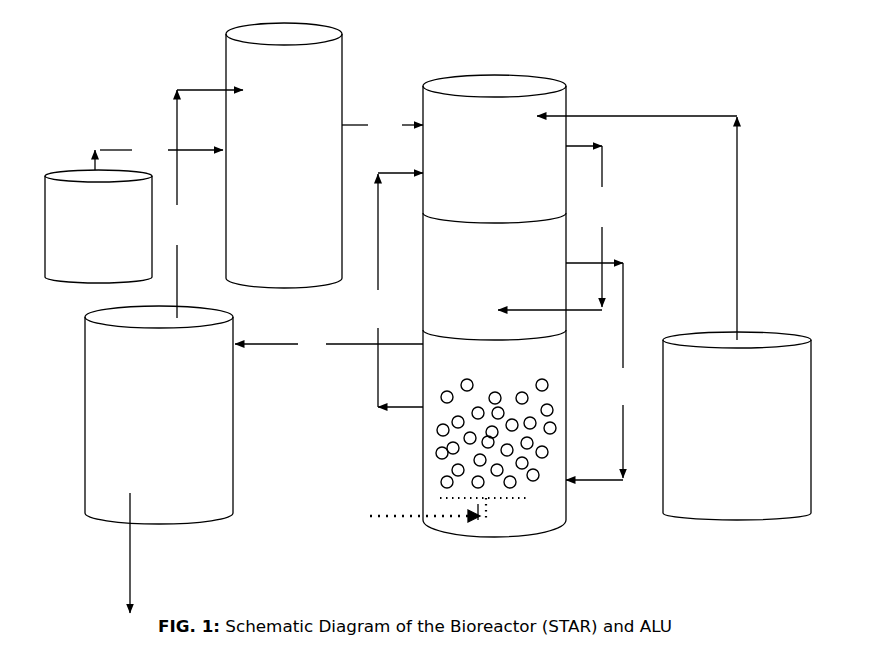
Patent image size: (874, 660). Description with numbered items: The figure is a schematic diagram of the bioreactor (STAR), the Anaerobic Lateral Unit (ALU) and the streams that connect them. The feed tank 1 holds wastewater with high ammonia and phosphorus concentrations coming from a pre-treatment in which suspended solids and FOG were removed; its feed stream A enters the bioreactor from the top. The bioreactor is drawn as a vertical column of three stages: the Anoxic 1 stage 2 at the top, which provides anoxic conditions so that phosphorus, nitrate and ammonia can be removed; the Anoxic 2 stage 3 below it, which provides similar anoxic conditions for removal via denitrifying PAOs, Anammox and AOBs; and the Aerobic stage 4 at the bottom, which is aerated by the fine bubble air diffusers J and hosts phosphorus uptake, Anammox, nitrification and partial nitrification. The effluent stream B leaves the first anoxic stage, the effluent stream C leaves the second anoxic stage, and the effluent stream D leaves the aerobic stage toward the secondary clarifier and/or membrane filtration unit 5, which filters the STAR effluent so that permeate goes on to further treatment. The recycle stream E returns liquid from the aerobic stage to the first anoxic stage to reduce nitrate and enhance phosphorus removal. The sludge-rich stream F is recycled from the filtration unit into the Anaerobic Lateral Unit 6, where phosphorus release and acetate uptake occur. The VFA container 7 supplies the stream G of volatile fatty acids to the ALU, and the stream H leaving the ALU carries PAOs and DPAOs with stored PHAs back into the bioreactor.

The feed tank 1 is at (737, 426).
The Anoxic 1 stage 2 is at (494, 149).
The Anoxic 2 stage 3 is at (494, 276).
The Aerobic stage 4 is at (494, 433).
The secondary clarifier and/or membrane filtration unit 5 is at (159, 459).
The Anaerobic Lateral Unit (ALU) 6 is at (284, 155).
The VFA container 7 is at (98, 226).
The feed stream A is at (642, 228).
The effluent stream from the Anoxic 1 stage B is at (555, 228).
The effluent stream from the Anoxic 2 stage C is at (597, 371).
The effluent stream from the Aerobic stage D is at (329, 345).
The recycle stream E is at (398, 290).
The sludge recycle stream F is at (208, 204).
The stream from the VFA container G is at (159, 156).
The stream leaving the ALU H is at (382, 126).
The fine bubble air diffusers J is at (412, 516).